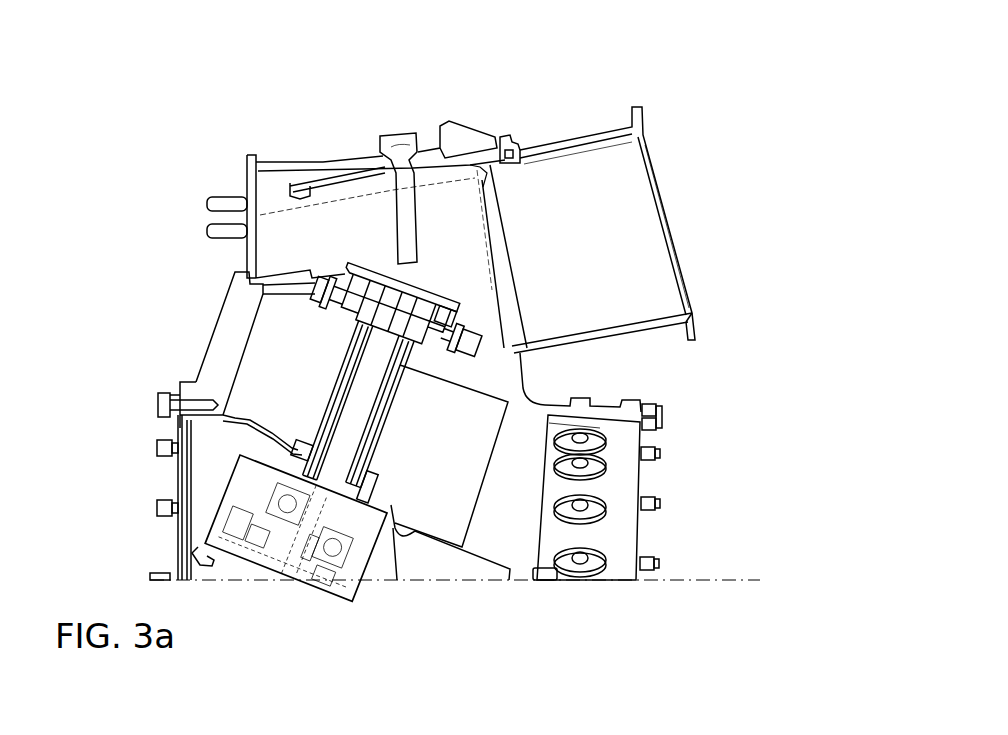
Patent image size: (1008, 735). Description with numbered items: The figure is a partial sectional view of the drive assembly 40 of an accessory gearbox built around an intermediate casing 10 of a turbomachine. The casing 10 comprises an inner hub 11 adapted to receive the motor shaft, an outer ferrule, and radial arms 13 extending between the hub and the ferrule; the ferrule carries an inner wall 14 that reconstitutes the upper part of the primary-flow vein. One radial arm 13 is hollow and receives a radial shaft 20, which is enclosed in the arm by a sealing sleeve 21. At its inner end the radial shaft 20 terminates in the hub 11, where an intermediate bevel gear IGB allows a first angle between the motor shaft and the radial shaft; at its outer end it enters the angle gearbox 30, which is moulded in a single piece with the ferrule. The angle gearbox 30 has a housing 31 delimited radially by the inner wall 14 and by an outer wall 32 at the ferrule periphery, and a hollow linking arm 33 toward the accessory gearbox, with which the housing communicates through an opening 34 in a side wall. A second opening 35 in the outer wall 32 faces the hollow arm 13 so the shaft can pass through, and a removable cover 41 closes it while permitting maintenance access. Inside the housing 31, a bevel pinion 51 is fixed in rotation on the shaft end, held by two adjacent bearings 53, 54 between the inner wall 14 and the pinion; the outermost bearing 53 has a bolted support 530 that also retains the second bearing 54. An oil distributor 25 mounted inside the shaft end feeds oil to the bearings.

The angle gearbox 30 is at (500, 115).
The housing 31 is at (305, 226).
The outer wall 32 is at (298, 180).
The linking arm 33 is at (605, 210).
The opening 34 is at (499, 253).
The second opening 35 is at (452, 165).
The drive assembly 40 is at (756, 341).
The cover 41 is at (367, 160).
The bevel pinion 51 is at (357, 263).
The outermost bearing 53 is at (451, 313).
The second bearing 54 is at (437, 339).
The support 530 is at (317, 283).
The inner wall 14 is at (425, 362).
The inner hub 11 is at (647, 435).
The casing 10 is at (647, 529).
The radial arm 13 is at (425, 483).
The radial shaft 20 is at (363, 383).
The sealing sleeve 21 is at (226, 390).
The oil distributor 25 is at (258, 306).
The intermediate bevel gear IGB is at (300, 522).